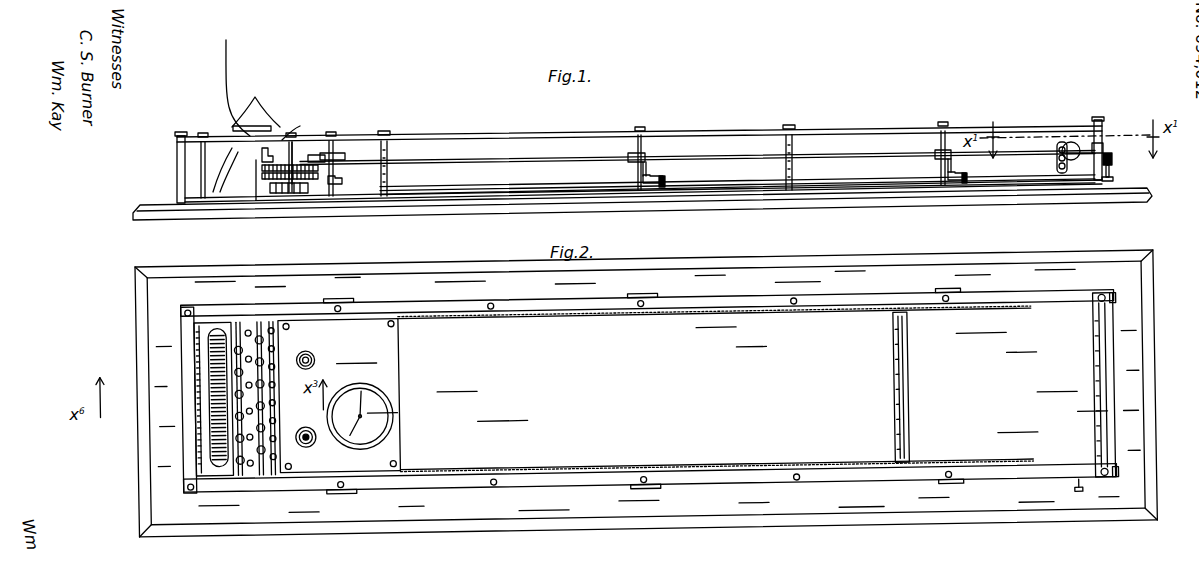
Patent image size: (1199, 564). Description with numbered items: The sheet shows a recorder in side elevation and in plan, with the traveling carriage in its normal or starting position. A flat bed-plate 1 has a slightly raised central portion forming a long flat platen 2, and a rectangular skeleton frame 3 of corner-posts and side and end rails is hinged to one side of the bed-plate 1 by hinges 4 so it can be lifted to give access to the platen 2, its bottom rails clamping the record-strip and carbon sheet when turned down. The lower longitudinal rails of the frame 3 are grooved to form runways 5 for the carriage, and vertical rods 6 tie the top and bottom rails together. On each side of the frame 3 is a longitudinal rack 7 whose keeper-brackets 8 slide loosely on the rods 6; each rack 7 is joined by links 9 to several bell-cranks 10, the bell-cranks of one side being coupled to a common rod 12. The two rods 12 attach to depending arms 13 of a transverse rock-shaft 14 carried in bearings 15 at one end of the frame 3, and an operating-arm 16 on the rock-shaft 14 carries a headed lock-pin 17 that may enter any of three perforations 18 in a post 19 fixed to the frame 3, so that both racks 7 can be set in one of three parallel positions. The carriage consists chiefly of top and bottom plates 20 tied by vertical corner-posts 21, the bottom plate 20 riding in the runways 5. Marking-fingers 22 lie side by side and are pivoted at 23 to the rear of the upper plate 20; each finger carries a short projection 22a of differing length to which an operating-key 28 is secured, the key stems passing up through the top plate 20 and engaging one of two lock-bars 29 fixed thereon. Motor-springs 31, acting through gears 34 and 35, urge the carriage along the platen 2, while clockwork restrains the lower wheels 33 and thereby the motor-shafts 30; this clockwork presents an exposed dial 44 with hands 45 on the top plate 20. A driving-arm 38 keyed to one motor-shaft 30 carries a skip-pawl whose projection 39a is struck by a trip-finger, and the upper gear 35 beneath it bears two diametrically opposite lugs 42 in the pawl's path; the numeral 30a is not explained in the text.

In FIG. 1, the bed-plate 1 is at (297, 200).
In FIG. 2, the bed-plate 1 is at (646, 399).
In FIG. 2, the platen 2 is at (697, 387).
In FIG. 2, the rectangular skeleton framework 3 is at (648, 394).
In FIG. 2, the hinges 4 is at (663, 364).
In FIG. 1, the guides or runways 5 is at (237, 197).
In FIG. 2, the guides or runways 5 is at (150, 400).
In FIG. 1, the bolts or rods 6 is at (340, 140).
In FIG. 1, the rack 7 is at (430, 162).
In FIG. 2, the rack 7 is at (742, 388).
In FIG. 1, the keeper-brackets 8 is at (345, 160).
In FIG. 1, the links 9 is at (365, 160).
In FIG. 1, the bell-cranks 10 is at (368, 183).
In FIG. 1, the common link or rod 12 is at (522, 172).
In FIG. 1, the depending arms 13 is at (1113, 166).
In FIG. 2, the depending arms 13 is at (1104, 394).
In FIG. 2, the rock-shaft 14 is at (1137, 384).
In FIG. 1, the bearings 15 is at (1108, 150).
In FIG. 2, the bearings 15 is at (1140, 381).
In FIG. 1, the operating-arm 16 is at (1082, 157).
In FIG. 1, the headed lock-pin 17 is at (1040, 152).
In FIG. 2, the headed lock-pin 17 is at (1070, 521).
In FIG. 1, the perforations 18 is at (1062, 153).
In FIG. 1, the post 19 is at (1060, 175).
In FIG. 2, the top and bottom plates 20 is at (365, 395).
In FIG. 1, the vertical tie-bolts or corner-posts 21 is at (393, 135).
In FIG. 1, the marking-fingers 22 is at (222, 160).
In FIG. 2, the marking-fingers 22 is at (225, 398).
In FIG. 1, the projection 22a is at (272, 147).
In FIG. 2, the projection 22a is at (284, 421).
In FIG. 1, the pivot 23 is at (230, 170).
In FIG. 1, the operating-key 28 is at (255, 97).
In FIG. 2, the operating-key 28 is at (255, 403).
In FIG. 1, the lock-bar 29 is at (282, 140).
In FIG. 2, the lock-bar 29 is at (261, 424).
In FIG. 1, the motor-shaft 30 is at (315, 186).
In FIG. 2, the motor-shaft 30 is at (327, 357).
In FIG. 1, the knob 30a is at (302, 142).
In FIG. 2, the knob 30a is at (305, 447).
In FIG. 1, the motor-springs 31 is at (310, 197).
In FIG. 1, the lower wheels 33 is at (343, 188).
In FIG. 1, the gear 34 is at (373, 198).
In FIG. 1, the upper gear 35 is at (340, 140).
In FIG. 1, the driving-arm 38 is at (318, 145).
In FIG. 1, the projection 39a is at (273, 207).
In FIG. 1, the lugs or projections 42 is at (317, 149).
In FIG. 2, the dial 44 is at (384, 415).
In FIG. 2, the hands 45 is at (397, 407).